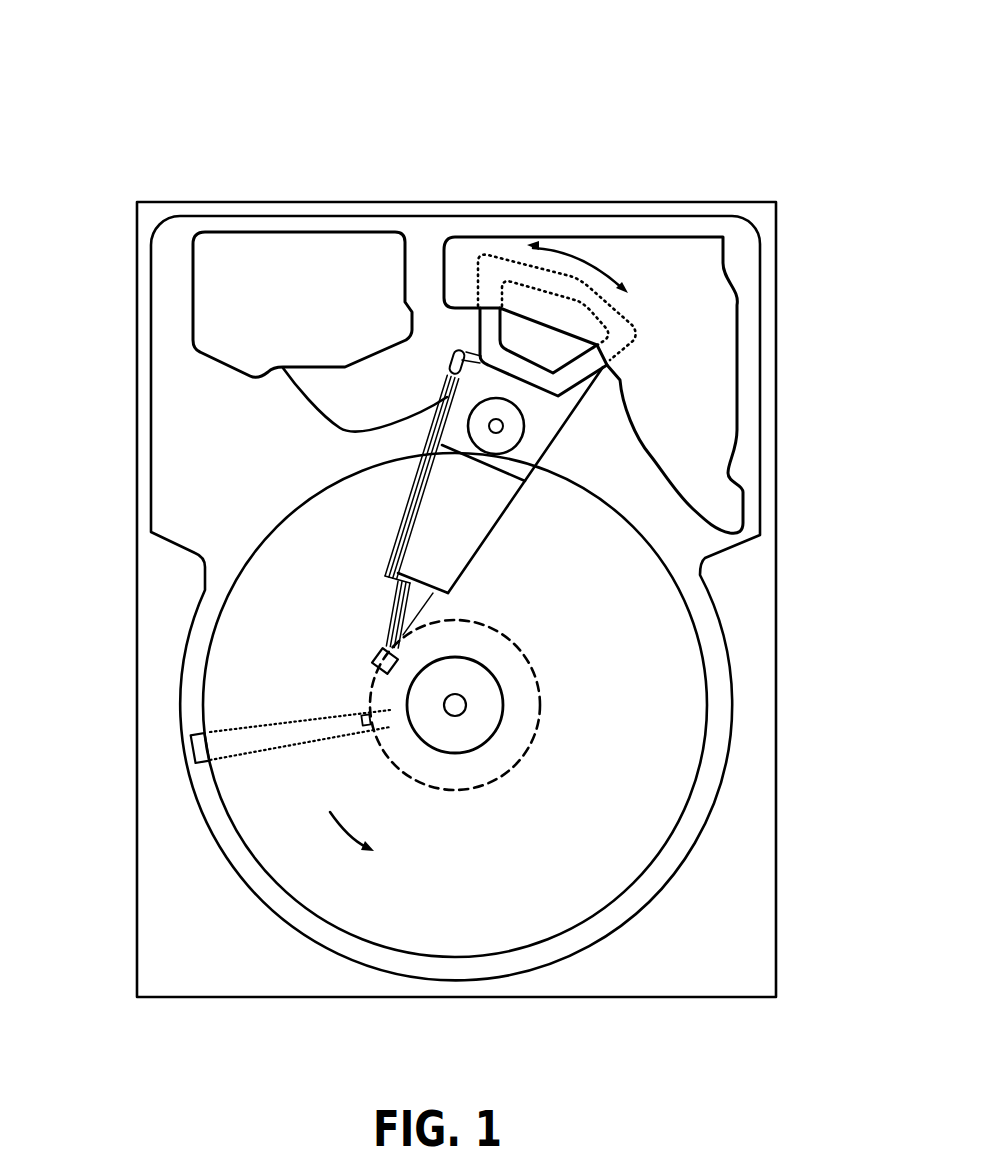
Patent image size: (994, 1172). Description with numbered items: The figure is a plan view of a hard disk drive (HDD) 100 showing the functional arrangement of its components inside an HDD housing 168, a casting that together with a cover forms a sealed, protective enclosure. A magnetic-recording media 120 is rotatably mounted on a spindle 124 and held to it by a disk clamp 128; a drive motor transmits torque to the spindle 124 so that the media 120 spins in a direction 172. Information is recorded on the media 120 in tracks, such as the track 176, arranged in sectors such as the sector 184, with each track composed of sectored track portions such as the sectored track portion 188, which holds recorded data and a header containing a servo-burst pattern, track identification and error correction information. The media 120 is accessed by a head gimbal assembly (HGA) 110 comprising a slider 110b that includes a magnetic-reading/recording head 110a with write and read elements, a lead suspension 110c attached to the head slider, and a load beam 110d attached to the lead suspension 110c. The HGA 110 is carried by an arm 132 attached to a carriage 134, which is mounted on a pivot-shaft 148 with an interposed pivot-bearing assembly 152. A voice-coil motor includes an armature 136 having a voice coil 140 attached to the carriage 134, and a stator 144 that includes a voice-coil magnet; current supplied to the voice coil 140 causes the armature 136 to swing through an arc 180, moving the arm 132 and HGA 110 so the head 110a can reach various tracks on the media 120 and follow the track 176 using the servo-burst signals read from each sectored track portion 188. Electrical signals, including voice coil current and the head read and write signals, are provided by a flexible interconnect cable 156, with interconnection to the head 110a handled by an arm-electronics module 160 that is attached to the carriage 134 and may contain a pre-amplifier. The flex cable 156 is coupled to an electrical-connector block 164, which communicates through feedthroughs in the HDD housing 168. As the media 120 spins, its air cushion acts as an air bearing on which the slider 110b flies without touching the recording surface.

The hard disk drive 100 is at (64, 79).
The head gimbal assembly 110 is at (231, 524).
The magnetic-reading/recording head 110a is at (365, 673).
The slider 110b is at (380, 647).
The lead suspension 110c is at (383, 610).
The load beam 110d is at (383, 567).
The magnetic-recording media 120 is at (637, 657).
The spindle 124 is at (467, 700).
The disk clamp 128 is at (482, 718).
The arm 132 is at (447, 545).
The carriage 134 is at (515, 458).
The armature 136 is at (477, 352).
The voice coil 140 is at (490, 320).
The stator 144 is at (705, 330).
The pivot-shaft 148 is at (503, 424).
The pivot-bearing assembly 152 is at (508, 438).
The flexible interconnect cable 156 is at (317, 403).
The arm-electronics module 160 is at (450, 396).
The electrical-connector block 164 is at (217, 303).
The HDD housing 168 is at (757, 217).
The direction 172 is at (347, 825).
The track 176 is at (530, 663).
The arc 180 is at (578, 258).
The sector 184 is at (192, 752).
The sectored track portion 188 is at (363, 717).